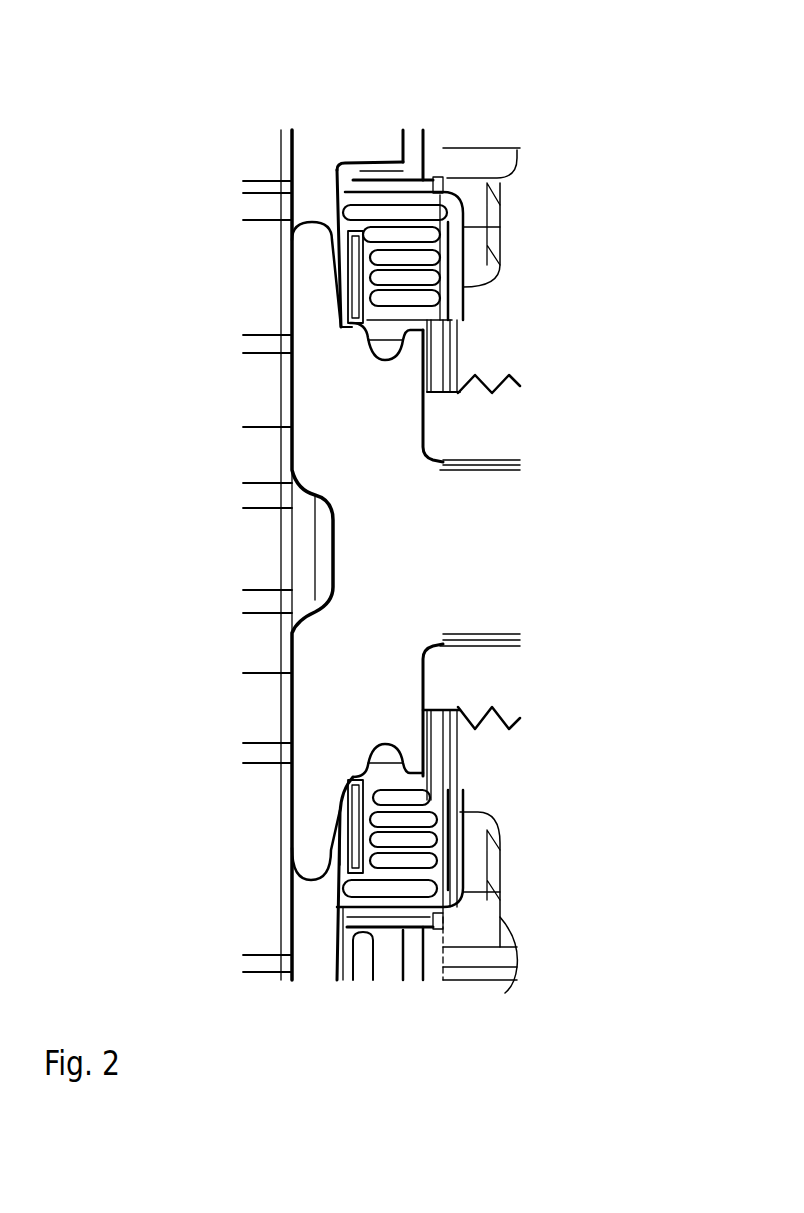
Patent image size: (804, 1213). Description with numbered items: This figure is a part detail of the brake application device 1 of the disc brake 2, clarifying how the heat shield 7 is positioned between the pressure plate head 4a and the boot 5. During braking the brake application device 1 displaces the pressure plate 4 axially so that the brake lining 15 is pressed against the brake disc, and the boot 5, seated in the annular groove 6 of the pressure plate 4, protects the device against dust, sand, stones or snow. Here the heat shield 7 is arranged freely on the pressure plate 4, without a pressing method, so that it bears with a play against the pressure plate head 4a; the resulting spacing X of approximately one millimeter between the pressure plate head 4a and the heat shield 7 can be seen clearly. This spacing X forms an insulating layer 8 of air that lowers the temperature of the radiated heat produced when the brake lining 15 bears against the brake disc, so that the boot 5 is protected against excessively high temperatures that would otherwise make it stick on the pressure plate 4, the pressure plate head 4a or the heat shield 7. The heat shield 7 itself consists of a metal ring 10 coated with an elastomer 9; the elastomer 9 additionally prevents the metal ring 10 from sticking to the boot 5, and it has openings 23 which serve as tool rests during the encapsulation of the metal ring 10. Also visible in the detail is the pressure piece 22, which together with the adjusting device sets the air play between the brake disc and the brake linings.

The brake application device 1 is at (502, 750).
The disc brake 2 is at (470, 127).
The pressure plate 4 is at (520, 640).
The pressure plate head 4a is at (292, 403).
The boot 5 is at (440, 296).
The annular groove 6 is at (393, 752).
The heat shield 7 is at (338, 240).
The insulating layer 8 is at (340, 833).
The elastomer 9 is at (350, 287).
The metal ring 10 is at (347, 231).
The brake lining 15 is at (273, 432).
The pressure piece 22 is at (508, 985).
The openings 23 is at (347, 277).
The spacing X is at (346, 853).